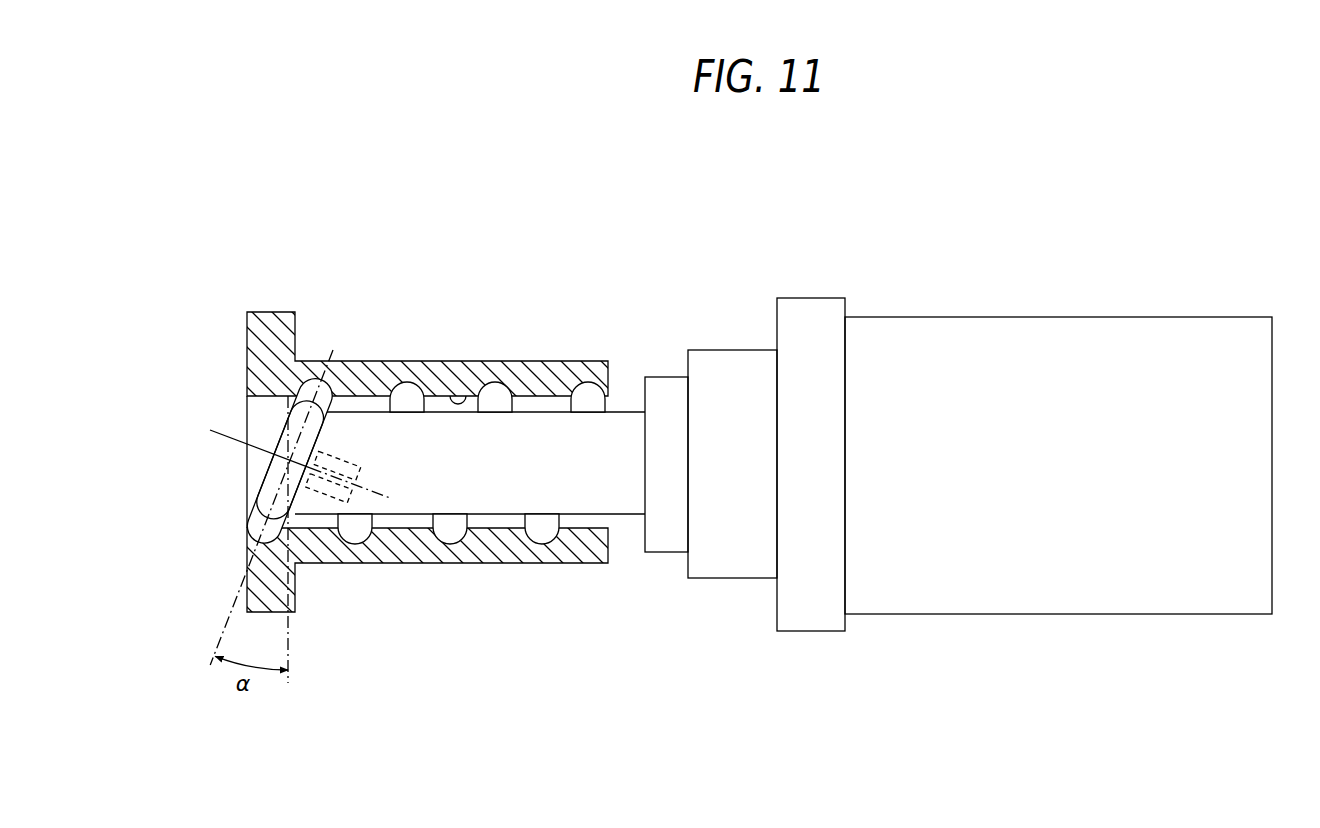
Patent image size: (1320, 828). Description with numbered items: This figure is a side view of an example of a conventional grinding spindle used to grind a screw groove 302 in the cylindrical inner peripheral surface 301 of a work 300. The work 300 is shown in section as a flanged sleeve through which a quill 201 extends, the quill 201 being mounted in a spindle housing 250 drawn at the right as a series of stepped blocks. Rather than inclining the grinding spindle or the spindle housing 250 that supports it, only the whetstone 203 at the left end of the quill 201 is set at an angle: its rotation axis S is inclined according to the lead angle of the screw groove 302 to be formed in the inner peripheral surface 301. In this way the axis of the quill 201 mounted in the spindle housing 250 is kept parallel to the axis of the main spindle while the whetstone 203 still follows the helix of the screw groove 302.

The work 300 is at (360, 362).
The cylindrical inner peripheral surface 301 is at (461, 396).
The screw groove 302 is at (505, 386).
The quill 201 is at (496, 518).
The whetstone 203 is at (262, 476).
The spindle housing 250 is at (1058, 317).
The rotation axis S is at (220, 430).